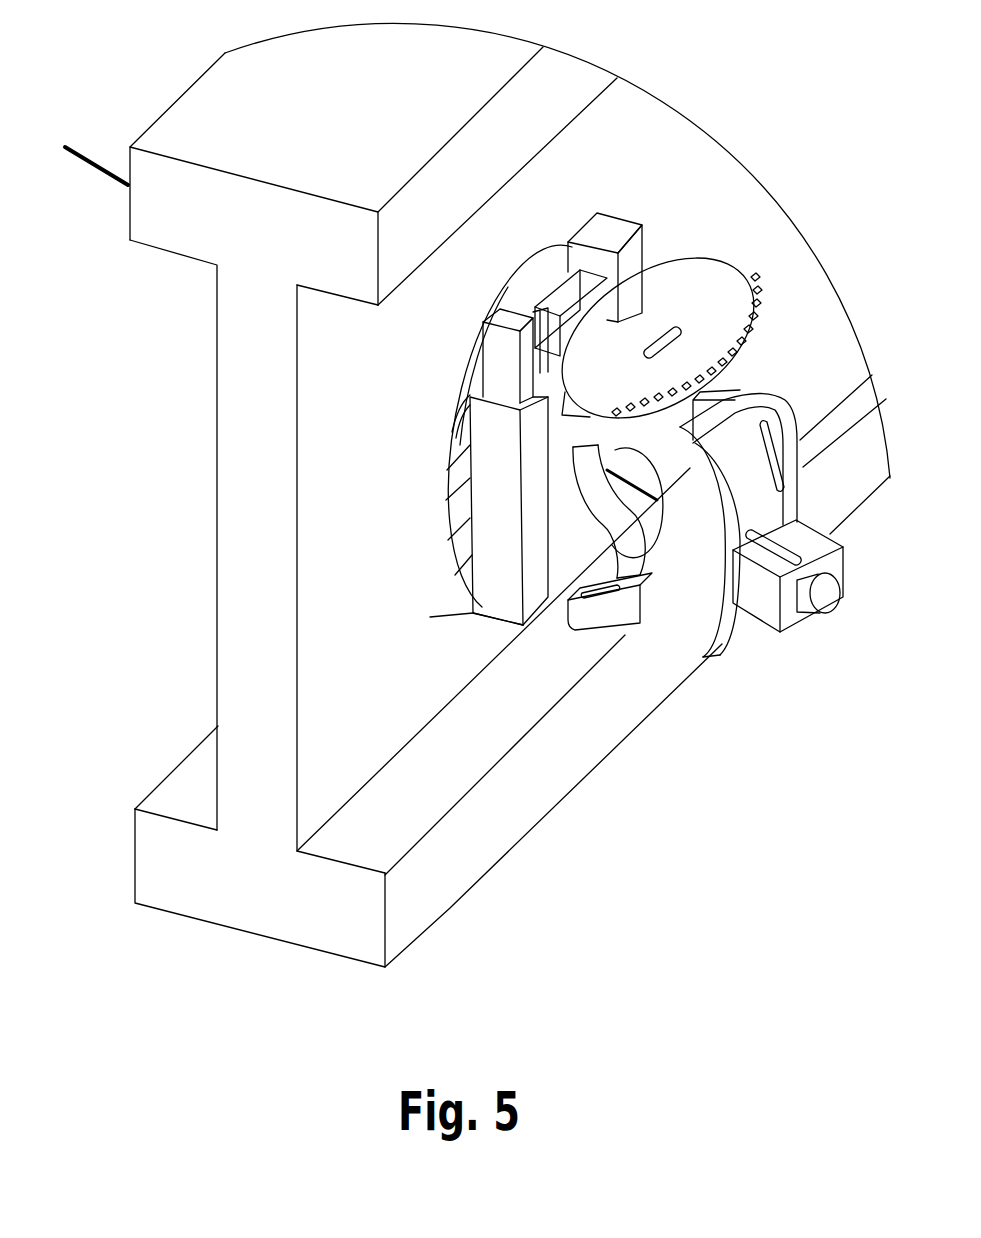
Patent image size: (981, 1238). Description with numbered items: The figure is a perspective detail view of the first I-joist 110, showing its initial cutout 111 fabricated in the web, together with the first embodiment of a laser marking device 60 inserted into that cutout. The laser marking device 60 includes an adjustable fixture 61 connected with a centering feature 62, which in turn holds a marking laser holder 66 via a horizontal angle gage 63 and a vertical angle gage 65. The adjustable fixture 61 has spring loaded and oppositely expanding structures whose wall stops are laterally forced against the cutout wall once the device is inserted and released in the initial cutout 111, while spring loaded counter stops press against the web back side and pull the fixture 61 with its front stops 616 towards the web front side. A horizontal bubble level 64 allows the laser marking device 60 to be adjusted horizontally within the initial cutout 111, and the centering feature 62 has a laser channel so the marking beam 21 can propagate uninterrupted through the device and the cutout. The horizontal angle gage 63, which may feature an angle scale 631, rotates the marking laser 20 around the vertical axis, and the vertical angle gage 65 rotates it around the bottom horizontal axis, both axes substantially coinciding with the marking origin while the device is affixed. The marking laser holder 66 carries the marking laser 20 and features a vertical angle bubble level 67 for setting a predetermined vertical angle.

The I-joist 110 is at (242, 1000).
The cutout 111 is at (450, 528).
The marking beam 21 is at (96, 169).
The adjustable fixture 61 is at (460, 397).
The front stops 616 is at (480, 327).
The centering feature 62 is at (605, 488).
The horizontal angle gage 63 is at (702, 338).
The angle scale 631 is at (743, 352).
The horizontal bubble level 64 is at (668, 325).
The vertical angle gage 65 is at (770, 397).
The marking laser holder 66 is at (836, 562).
The vertical angle bubble level 67 is at (783, 540).
The marking laser 20 is at (835, 593).
The laser marking device 60 is at (767, 673).